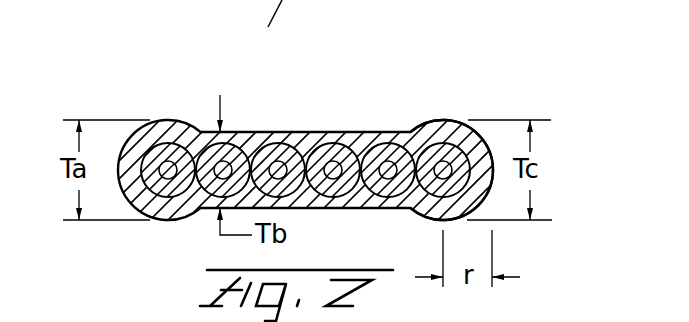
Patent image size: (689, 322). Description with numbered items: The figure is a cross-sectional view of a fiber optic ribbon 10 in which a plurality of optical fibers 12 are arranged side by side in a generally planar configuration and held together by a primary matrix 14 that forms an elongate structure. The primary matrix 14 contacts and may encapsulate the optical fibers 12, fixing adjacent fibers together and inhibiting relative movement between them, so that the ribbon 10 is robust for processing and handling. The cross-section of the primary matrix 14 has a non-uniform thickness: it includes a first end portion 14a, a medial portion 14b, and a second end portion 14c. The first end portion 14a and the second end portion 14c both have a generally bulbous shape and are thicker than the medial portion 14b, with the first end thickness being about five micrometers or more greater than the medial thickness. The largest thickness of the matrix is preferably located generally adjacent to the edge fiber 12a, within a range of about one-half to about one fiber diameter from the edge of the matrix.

The fiber optic ribbon 10 is at (151, 96).
The optical fibers 12 is at (274, 147).
The edge fiber 12a is at (449, 140).
The primary matrix 14 is at (316, 132).
The first end portion 14a is at (168, 219).
The medial portion 14b is at (342, 208).
The second end portion 14c is at (440, 125).